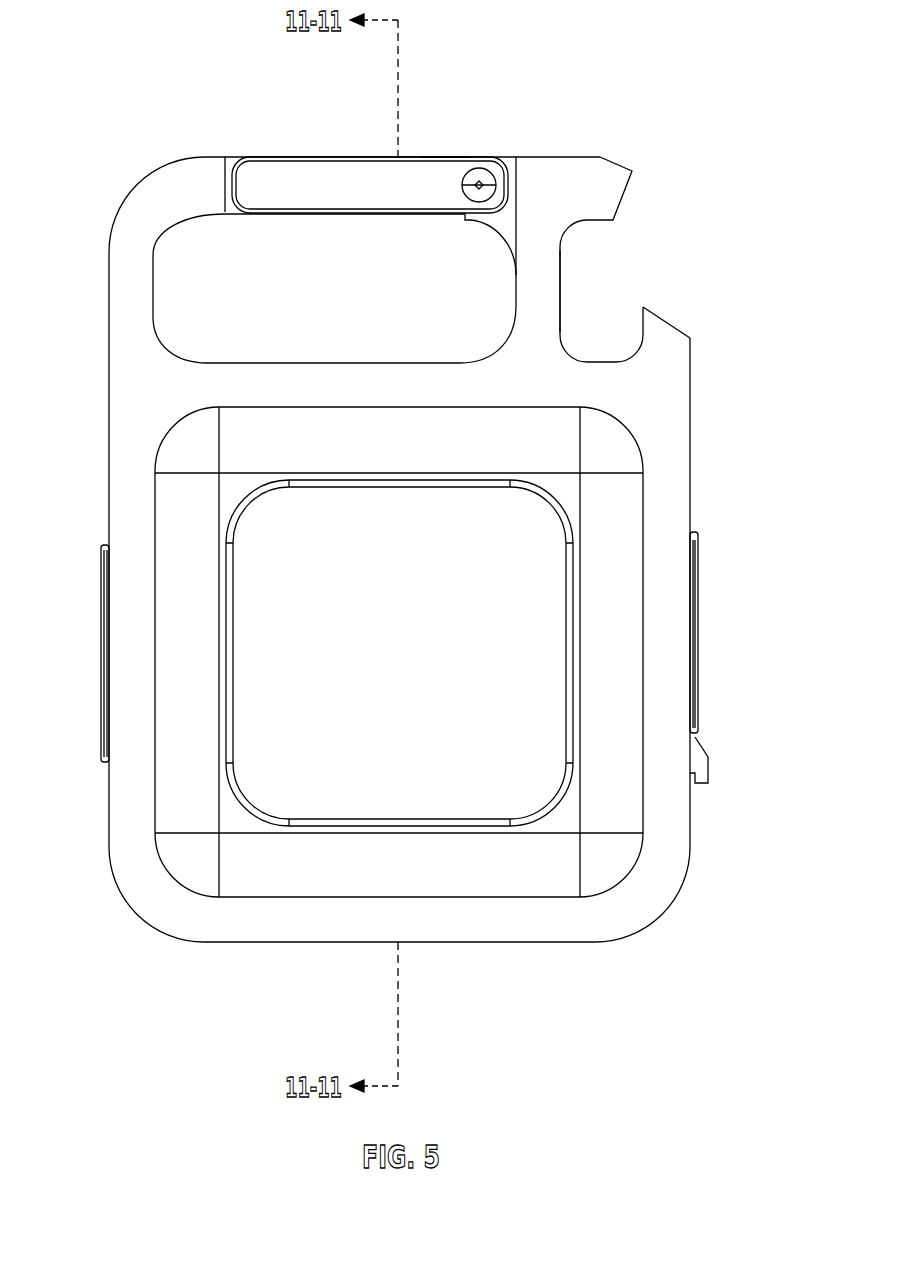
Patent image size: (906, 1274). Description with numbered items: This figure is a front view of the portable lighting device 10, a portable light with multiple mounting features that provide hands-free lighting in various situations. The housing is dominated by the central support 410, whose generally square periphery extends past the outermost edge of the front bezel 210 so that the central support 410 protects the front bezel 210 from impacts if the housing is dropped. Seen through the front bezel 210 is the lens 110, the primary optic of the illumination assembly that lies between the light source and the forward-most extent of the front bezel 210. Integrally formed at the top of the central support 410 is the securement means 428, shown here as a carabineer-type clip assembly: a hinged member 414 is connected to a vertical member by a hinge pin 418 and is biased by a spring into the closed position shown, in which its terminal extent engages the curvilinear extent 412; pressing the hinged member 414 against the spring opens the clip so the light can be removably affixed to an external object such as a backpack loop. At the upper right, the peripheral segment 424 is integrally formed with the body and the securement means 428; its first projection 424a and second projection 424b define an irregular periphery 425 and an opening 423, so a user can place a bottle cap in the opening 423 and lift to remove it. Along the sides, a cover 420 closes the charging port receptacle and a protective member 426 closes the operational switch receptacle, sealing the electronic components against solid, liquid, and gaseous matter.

The portable lighting device 10 is at (106, 128).
The central support 410 is at (123, 380).
The curvilinear extent 412 is at (205, 178).
The hinged member 414 is at (292, 180).
The hinge pin 418 is at (481, 183).
The securement means 428 is at (441, 117).
The peripheral segment 424 is at (722, 173).
The first projection 424a is at (605, 172).
The second projection 424b is at (663, 336).
The opening 423 is at (628, 265).
The irregular periphery 425 is at (562, 313).
The front body or bezel 210 is at (615, 445).
The lens 110 is at (537, 590).
The protective member 426 is at (101, 655).
The cover 420 is at (700, 640).